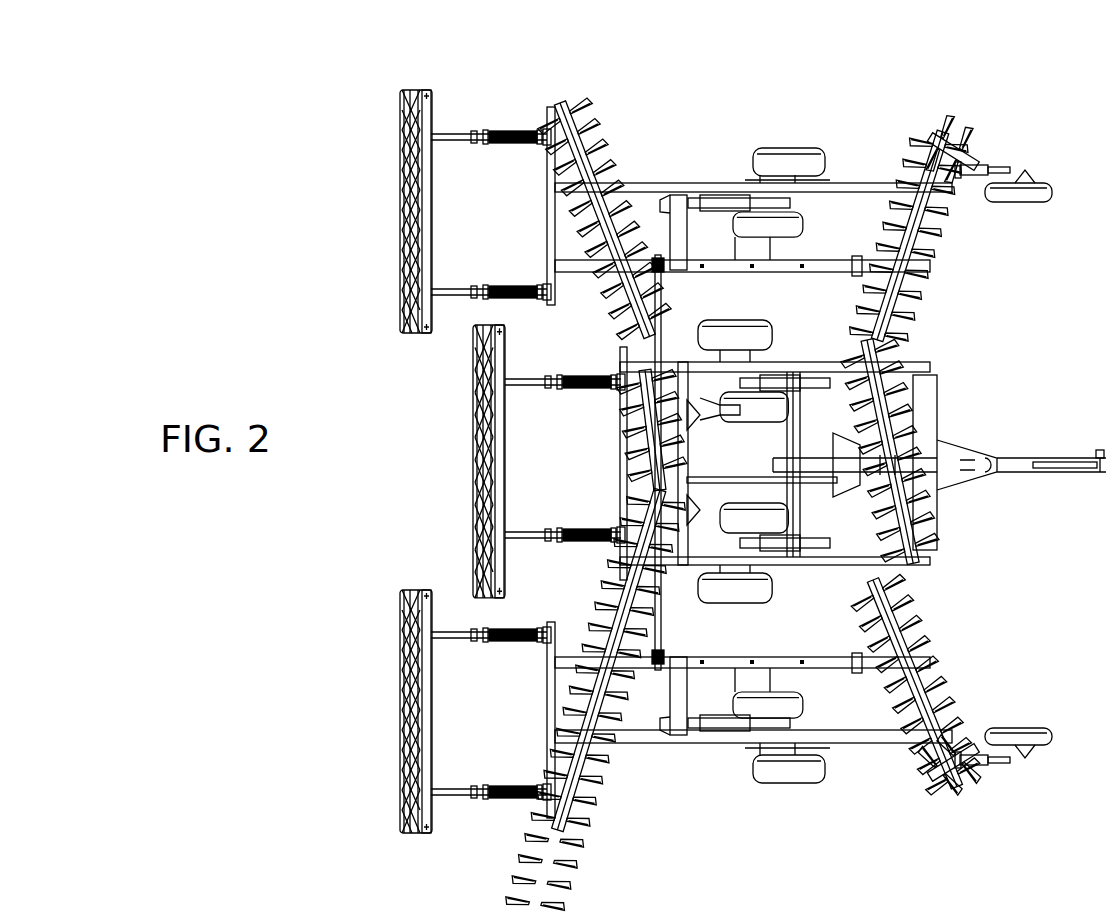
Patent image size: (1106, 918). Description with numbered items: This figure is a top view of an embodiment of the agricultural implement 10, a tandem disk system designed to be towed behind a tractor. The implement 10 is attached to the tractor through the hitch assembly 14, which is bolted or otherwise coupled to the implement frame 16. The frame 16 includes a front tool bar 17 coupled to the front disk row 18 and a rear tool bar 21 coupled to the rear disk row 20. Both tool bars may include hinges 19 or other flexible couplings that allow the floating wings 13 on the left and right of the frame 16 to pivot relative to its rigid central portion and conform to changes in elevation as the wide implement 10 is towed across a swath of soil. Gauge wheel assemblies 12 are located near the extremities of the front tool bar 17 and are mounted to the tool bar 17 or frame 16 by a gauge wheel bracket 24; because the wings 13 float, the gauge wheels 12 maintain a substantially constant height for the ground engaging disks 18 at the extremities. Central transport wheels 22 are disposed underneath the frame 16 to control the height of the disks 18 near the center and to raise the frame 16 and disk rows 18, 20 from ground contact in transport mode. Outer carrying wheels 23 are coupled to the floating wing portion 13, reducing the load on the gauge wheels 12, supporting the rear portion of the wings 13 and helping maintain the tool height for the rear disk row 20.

The agricultural implement 10 is at (702, 104).
The gauge wheel assemblies 12 is at (1060, 171).
The floating wings 13 is at (905, 180).
The hitch assembly 14 is at (1013, 462).
The implement frame 16 is at (870, 190).
The front tool bar 17 is at (887, 345).
The front disk row 18 is at (968, 787).
The hinges 19 is at (912, 323).
The rear disk row 20 is at (584, 822).
The rear tool bar 21 is at (597, 767).
The transport wheels 22 is at (745, 327).
The outer carrying wheels 23 is at (787, 158).
The gauge wheel bracket 24 is at (984, 162).